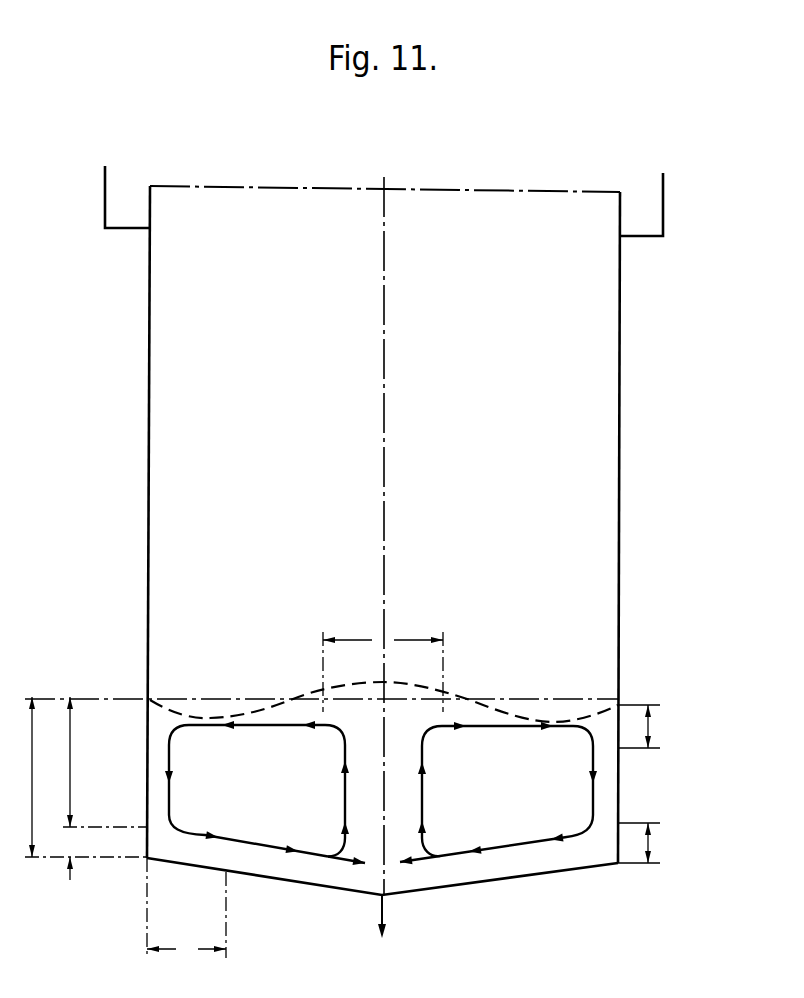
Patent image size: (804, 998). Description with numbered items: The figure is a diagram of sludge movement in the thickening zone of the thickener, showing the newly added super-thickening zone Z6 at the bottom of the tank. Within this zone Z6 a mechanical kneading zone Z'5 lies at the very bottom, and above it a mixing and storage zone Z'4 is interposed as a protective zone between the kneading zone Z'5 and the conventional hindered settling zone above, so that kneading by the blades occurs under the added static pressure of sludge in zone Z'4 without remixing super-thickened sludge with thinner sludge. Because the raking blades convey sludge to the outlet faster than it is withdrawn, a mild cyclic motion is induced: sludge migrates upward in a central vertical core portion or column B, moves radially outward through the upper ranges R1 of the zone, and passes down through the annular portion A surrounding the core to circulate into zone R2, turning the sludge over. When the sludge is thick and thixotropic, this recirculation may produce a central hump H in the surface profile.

The annular portion A is at (186, 909).
The central vertical core portion B is at (383, 671).
The central pump H is at (401, 683).
The upper ranges of the zone R1 is at (648, 726).
The zone R2 is at (648, 843).
The super-thickening zone Z6 is at (31, 777).
The mixing and storage zone Z'4 is at (71, 762).
The mechanical kneading zone Z'5 is at (71, 857).